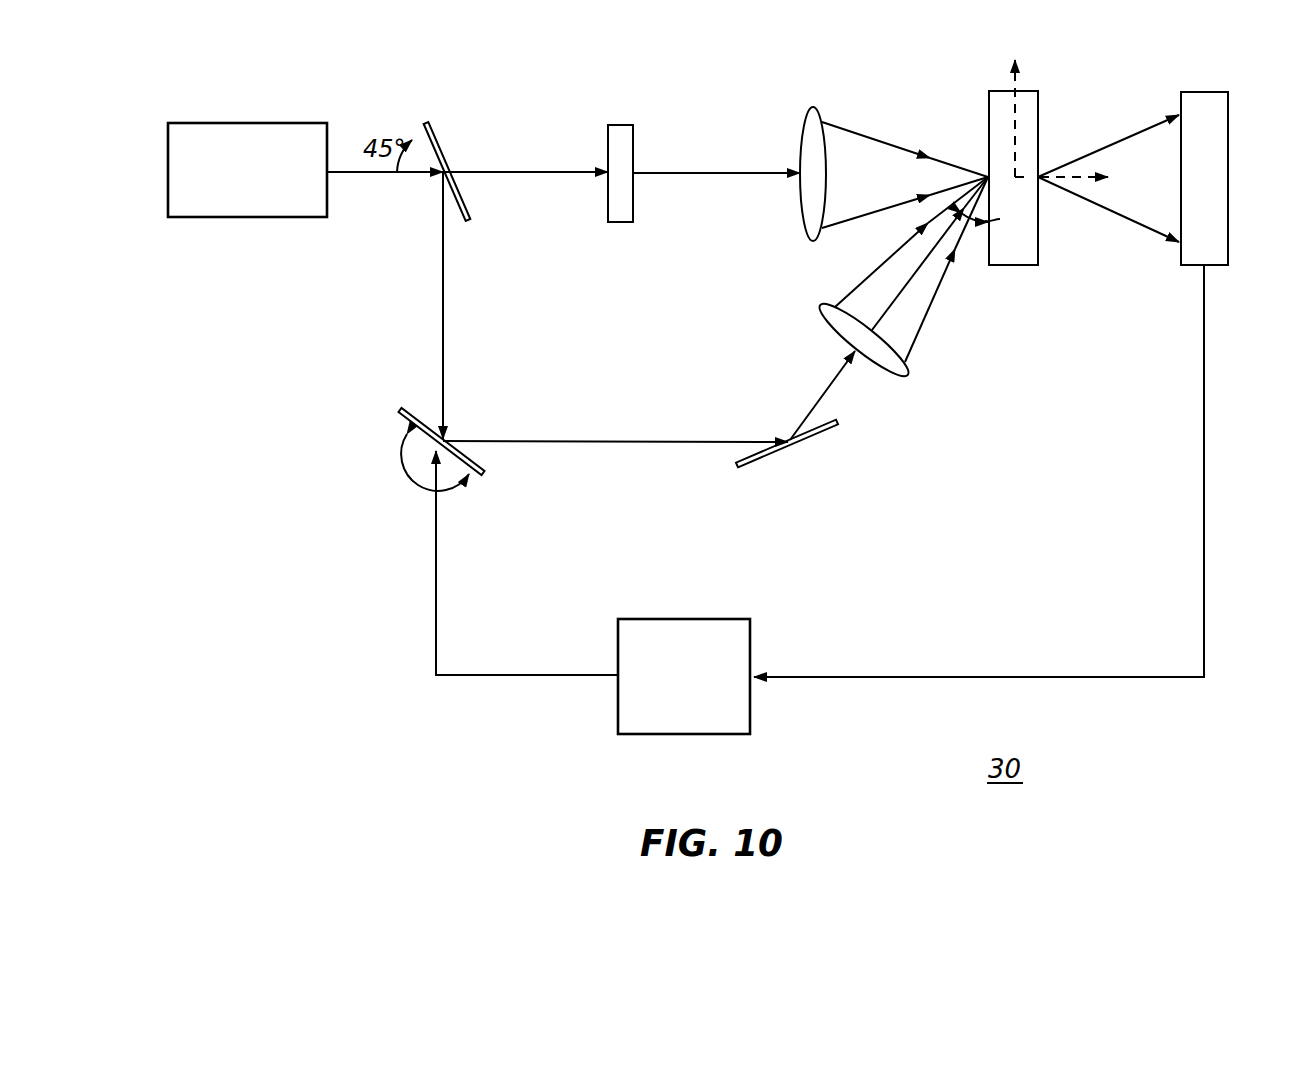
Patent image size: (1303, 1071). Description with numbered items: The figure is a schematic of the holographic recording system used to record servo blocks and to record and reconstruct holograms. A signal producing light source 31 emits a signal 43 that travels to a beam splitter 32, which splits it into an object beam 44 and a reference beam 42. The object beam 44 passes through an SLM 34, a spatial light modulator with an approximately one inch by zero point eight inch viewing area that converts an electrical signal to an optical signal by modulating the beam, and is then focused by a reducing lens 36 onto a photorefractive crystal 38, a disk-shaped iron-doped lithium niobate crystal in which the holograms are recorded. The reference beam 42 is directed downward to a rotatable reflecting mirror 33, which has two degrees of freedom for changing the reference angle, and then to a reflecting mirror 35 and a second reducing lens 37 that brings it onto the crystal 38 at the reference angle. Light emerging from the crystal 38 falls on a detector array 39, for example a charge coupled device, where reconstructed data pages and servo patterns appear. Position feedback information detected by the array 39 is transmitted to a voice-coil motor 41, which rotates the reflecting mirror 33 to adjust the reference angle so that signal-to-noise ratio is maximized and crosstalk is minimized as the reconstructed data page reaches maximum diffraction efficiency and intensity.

The light source 31 is at (238, 217).
The beam splitter 32 is at (428, 122).
The rotatable reflecting mirror 33 is at (483, 473).
The SLM 34 is at (622, 125).
The reflecting mirror 35 is at (835, 422).
The reducing lens 36 is at (815, 107).
The reducing lens 37 is at (908, 375).
The photorefractive crystal 38 is at (1010, 265).
The detector array 39 is at (1228, 114).
The voice-coil motor 41 is at (651, 734).
The reference beam 42 is at (443, 353).
The signal 43 is at (371, 173).
The object beam 44 is at (500, 173).